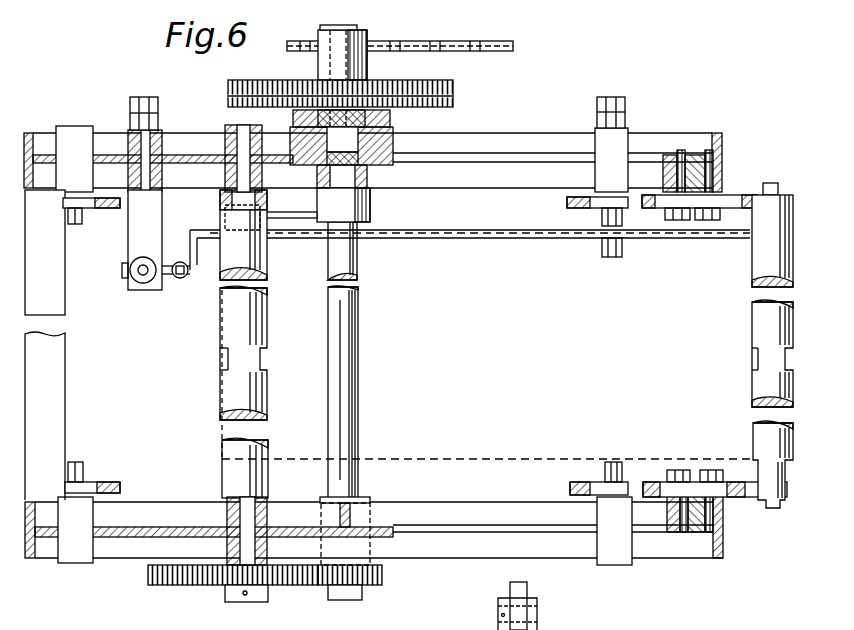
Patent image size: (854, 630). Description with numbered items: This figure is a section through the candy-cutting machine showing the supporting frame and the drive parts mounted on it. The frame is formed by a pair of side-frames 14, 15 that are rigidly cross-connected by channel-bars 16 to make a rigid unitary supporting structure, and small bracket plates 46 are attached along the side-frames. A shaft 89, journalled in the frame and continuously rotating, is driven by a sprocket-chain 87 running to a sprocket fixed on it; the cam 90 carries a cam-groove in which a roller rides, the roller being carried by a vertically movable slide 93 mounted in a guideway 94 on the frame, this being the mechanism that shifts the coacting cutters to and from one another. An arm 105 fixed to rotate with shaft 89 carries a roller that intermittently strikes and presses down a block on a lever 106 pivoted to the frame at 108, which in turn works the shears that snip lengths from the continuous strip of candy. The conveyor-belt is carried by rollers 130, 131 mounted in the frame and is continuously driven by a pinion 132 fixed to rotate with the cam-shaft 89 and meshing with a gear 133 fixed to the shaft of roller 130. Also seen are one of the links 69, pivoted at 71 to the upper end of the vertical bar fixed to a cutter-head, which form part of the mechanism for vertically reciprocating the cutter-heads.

The side-frame 14 is at (660, 548).
The side-frame 15 is at (494, 131).
The channel-bar 16 is at (66, 392).
The bracket plate 46 is at (96, 208).
The link 69 is at (528, 590).
The pivot 71 is at (520, 618).
The sprocket-chain 87 is at (425, 49).
The shaft 89 is at (358, 348).
The cam 90 is at (430, 80).
The slide 93 is at (330, 122).
The guideway 94 is at (293, 119).
The arm 105 is at (308, 198).
The lever 106 is at (479, 238).
The pivot 108 is at (625, 243).
The roller 130 is at (262, 327).
The roller 131 is at (768, 386).
The pinion 132 is at (370, 586).
The gear 133 is at (213, 586).